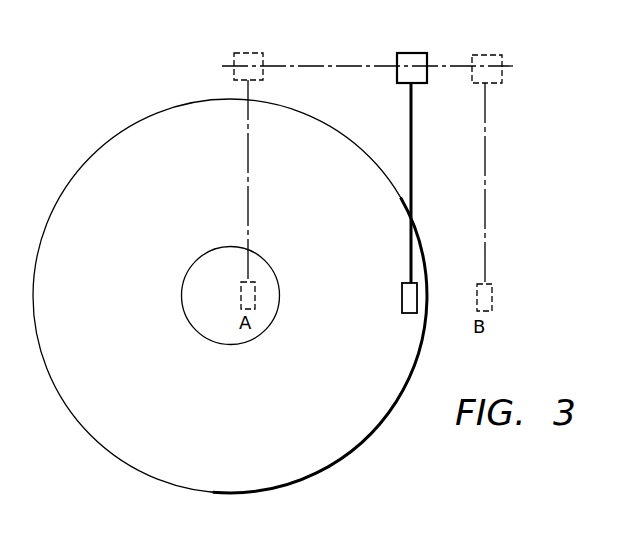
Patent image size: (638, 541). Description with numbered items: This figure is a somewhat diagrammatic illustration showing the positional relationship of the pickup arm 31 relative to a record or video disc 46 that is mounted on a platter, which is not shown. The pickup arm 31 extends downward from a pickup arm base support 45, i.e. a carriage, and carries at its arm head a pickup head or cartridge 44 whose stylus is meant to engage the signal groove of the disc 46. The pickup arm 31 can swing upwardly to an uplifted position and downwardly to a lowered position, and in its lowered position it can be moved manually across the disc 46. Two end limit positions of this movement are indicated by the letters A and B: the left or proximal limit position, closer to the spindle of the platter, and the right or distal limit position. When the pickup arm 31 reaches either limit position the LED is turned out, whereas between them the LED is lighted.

The pickup arm 31 is at (413, 136).
The pickup head or cartridge 44 is at (402, 297).
The pickup arm base support 45 is at (412, 52).
The record or video disc 46 is at (123, 130).